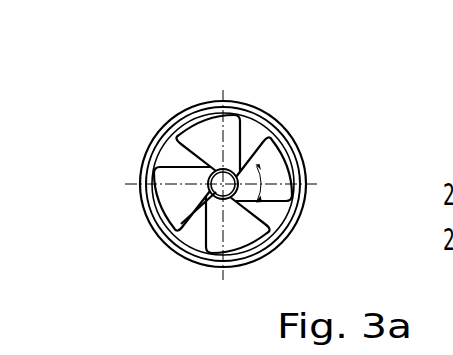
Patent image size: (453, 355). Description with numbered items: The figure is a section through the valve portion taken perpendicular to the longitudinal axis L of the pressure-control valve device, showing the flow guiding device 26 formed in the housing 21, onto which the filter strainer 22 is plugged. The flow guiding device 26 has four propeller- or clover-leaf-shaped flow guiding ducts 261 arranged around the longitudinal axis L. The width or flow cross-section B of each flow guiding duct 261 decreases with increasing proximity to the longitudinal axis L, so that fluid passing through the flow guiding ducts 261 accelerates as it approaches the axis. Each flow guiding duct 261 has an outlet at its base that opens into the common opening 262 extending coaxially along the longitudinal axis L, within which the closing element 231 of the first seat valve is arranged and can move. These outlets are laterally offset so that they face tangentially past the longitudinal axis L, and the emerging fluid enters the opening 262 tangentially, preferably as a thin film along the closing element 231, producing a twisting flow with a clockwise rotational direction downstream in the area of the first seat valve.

The housing 21 is at (272, 215).
The filter strainer 22 is at (298, 202).
The closing element 231 is at (236, 170).
The flow guiding device 26 is at (314, 166).
The flow guiding duct 261 is at (191, 134).
The common opening 262 is at (203, 229).
The width or flow cross-section B is at (267, 175).
The longitudinal axis L is at (200, 158).